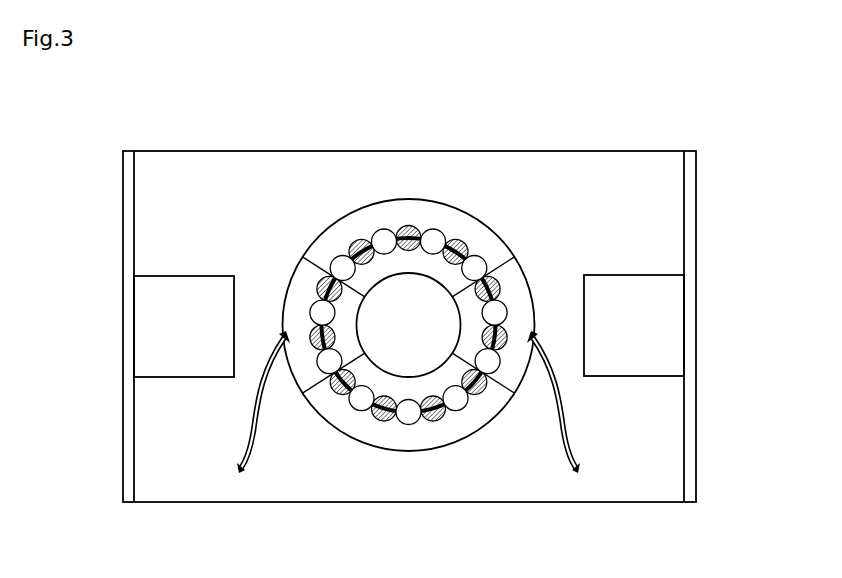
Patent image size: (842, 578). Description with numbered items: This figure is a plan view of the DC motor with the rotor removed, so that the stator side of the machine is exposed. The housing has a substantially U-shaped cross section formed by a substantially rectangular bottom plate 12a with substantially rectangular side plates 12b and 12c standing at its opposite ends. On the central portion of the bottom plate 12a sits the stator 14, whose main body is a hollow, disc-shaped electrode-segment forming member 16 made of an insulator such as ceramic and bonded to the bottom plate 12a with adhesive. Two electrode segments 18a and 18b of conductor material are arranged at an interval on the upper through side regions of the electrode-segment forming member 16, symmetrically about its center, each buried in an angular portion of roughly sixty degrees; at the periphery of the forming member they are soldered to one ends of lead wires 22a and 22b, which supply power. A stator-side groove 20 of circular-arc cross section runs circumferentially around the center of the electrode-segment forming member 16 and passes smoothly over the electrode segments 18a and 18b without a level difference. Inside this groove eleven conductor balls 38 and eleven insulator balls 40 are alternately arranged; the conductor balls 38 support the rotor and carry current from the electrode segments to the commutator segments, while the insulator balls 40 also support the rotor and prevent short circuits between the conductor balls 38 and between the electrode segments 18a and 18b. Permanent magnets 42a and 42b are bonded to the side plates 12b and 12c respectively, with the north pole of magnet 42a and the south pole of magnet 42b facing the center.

The bottom plate 12a is at (655, 483).
The side plate 12b is at (124, 194).
The side plate 12c is at (694, 190).
The stator 14 is at (365, 445).
The electrode-segment forming member 16 is at (417, 437).
The electrode segment 18a is at (302, 279).
The electrode segment 18b is at (518, 279).
The stator-side groove 20 is at (448, 415).
The lead wire 22a is at (245, 445).
The lead wire 22b is at (575, 443).
The conductor ball 38 is at (356, 240).
The insulator ball 40 is at (386, 238).
The permanent magnet 42a is at (143, 359).
The permanent magnet 42b is at (672, 358).